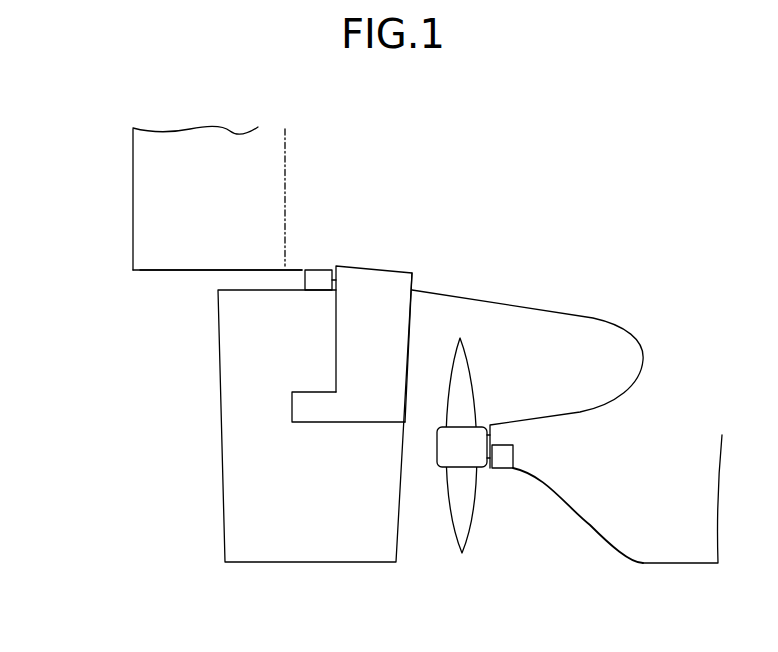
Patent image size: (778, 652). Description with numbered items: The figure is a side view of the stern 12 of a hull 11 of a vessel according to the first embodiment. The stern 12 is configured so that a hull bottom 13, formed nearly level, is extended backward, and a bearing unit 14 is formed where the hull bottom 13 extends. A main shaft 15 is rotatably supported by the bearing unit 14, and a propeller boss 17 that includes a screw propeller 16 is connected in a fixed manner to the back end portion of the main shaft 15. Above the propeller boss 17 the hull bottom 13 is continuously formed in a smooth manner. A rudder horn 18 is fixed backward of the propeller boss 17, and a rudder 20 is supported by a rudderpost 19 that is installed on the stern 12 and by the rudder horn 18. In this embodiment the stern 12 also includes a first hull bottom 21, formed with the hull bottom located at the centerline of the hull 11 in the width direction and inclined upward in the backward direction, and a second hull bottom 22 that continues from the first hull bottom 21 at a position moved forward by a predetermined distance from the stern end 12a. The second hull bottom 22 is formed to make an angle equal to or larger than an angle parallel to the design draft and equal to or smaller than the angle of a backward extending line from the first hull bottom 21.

The hull 11 is at (716, 151).
The stern 12 is at (493, 168).
The stern end 12a is at (126, 271).
The hull bottom 13 is at (695, 565).
The bearing unit 14 is at (576, 505).
The main shaft 15 is at (495, 446).
The screw propeller 16 is at (465, 373).
The propeller boss 17 is at (443, 450).
The rudder horn 18 is at (402, 318).
The rudderpost 19 is at (318, 278).
The rudder 20 is at (232, 498).
The first hull bottom 21 is at (500, 303).
The second hull bottom 22 is at (160, 272).